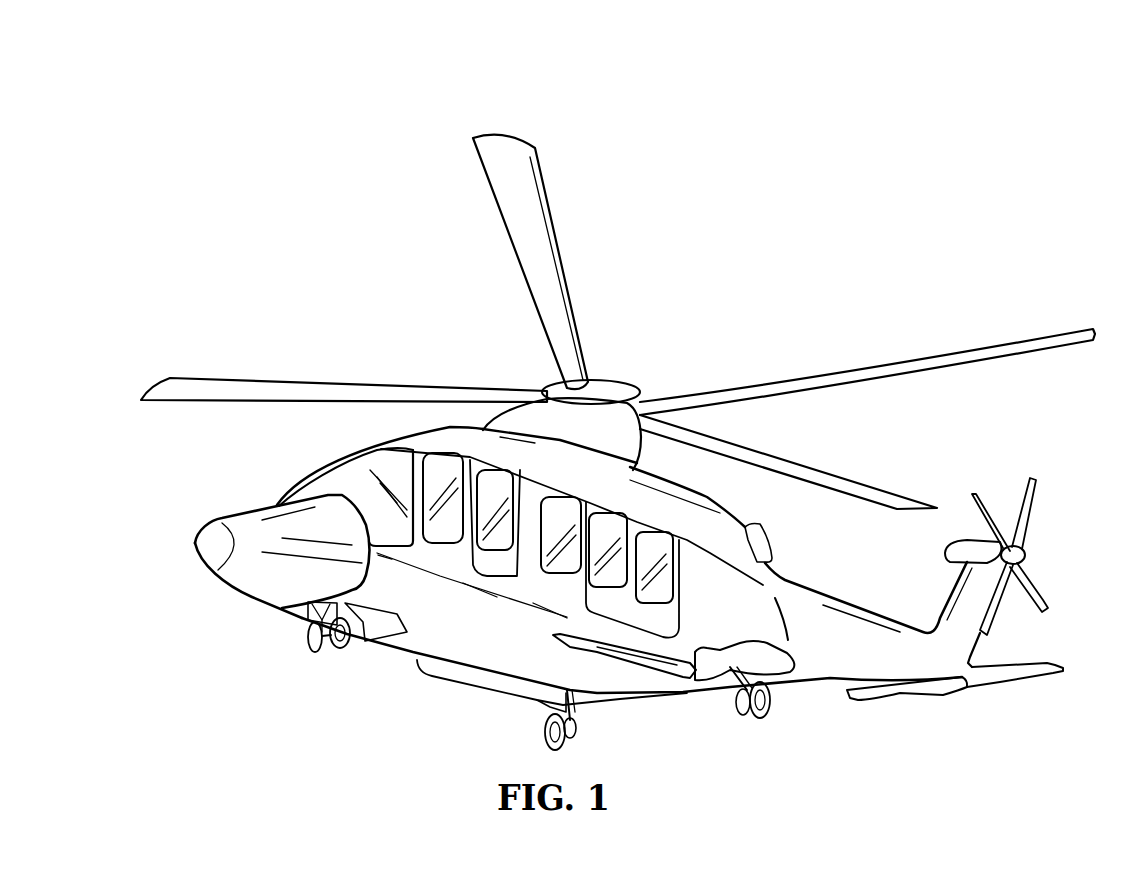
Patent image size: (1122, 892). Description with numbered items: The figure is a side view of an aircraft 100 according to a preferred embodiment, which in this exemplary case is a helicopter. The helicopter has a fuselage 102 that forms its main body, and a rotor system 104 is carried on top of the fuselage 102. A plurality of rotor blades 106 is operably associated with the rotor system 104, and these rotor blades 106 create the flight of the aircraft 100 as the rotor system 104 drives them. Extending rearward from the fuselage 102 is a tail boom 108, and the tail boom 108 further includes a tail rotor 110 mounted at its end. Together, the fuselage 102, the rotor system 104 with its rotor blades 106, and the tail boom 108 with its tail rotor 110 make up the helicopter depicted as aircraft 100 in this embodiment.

The aircraft 100 is at (283, 121).
The fuselage 102 is at (418, 650).
The rotor system 104 is at (634, 352).
The rotor blades 106 is at (852, 380).
The tail boom 108 is at (823, 672).
The tail rotor 110 is at (1027, 522).